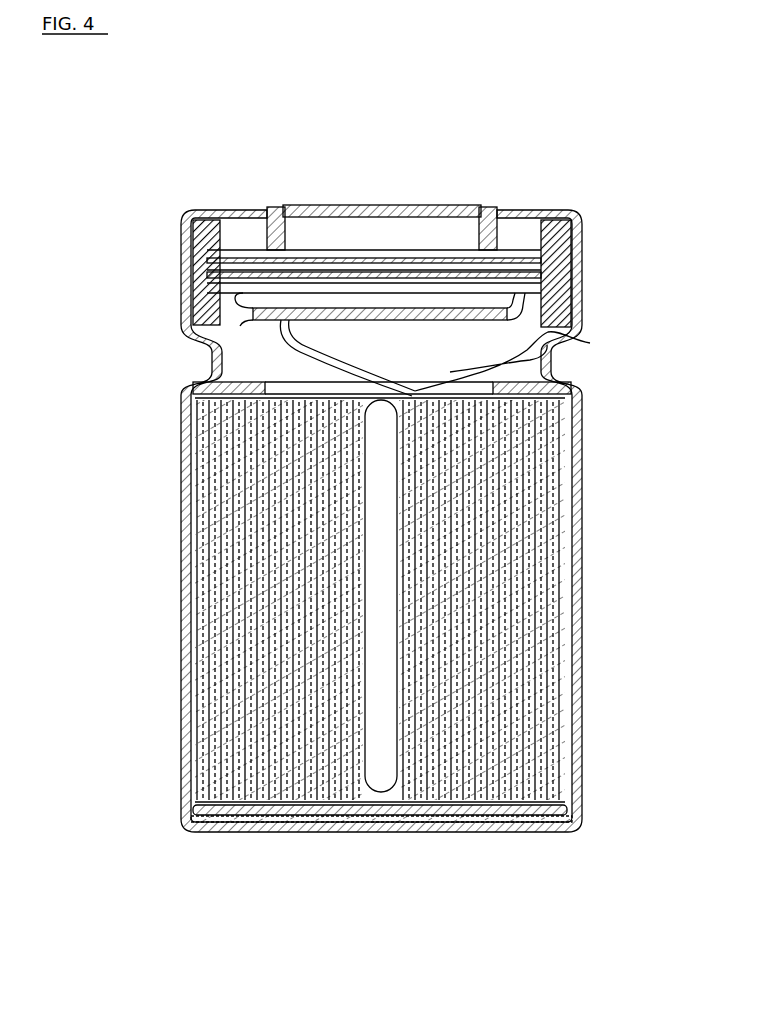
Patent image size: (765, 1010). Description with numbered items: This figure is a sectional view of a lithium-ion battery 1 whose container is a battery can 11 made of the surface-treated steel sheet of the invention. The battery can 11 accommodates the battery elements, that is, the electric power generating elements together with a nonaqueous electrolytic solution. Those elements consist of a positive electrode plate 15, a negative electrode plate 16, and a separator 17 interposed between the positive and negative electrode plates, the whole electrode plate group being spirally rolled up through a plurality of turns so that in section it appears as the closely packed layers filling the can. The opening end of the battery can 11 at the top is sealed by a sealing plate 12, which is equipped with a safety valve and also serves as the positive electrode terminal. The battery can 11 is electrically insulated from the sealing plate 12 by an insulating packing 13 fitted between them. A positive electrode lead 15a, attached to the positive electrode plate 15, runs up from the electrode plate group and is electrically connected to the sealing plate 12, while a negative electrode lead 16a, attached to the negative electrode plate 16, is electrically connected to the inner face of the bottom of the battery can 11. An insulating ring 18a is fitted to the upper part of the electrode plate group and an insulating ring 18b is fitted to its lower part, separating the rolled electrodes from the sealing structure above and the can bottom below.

The lithium-ion battery 1 is at (541, 170).
The battery can 11 is at (183, 502).
The sealing plate 12 is at (321, 206).
The insulating packing 13 is at (566, 266).
The positive electrode plate 15 is at (572, 668).
The positive electrode lead 15a is at (548, 349).
The negative electrode plate 16 is at (576, 620).
The negative electrode lead 16a is at (418, 832).
The separator 17 is at (576, 542).
The insulating ring 18a is at (572, 388).
The insulating ring 18b is at (582, 813).